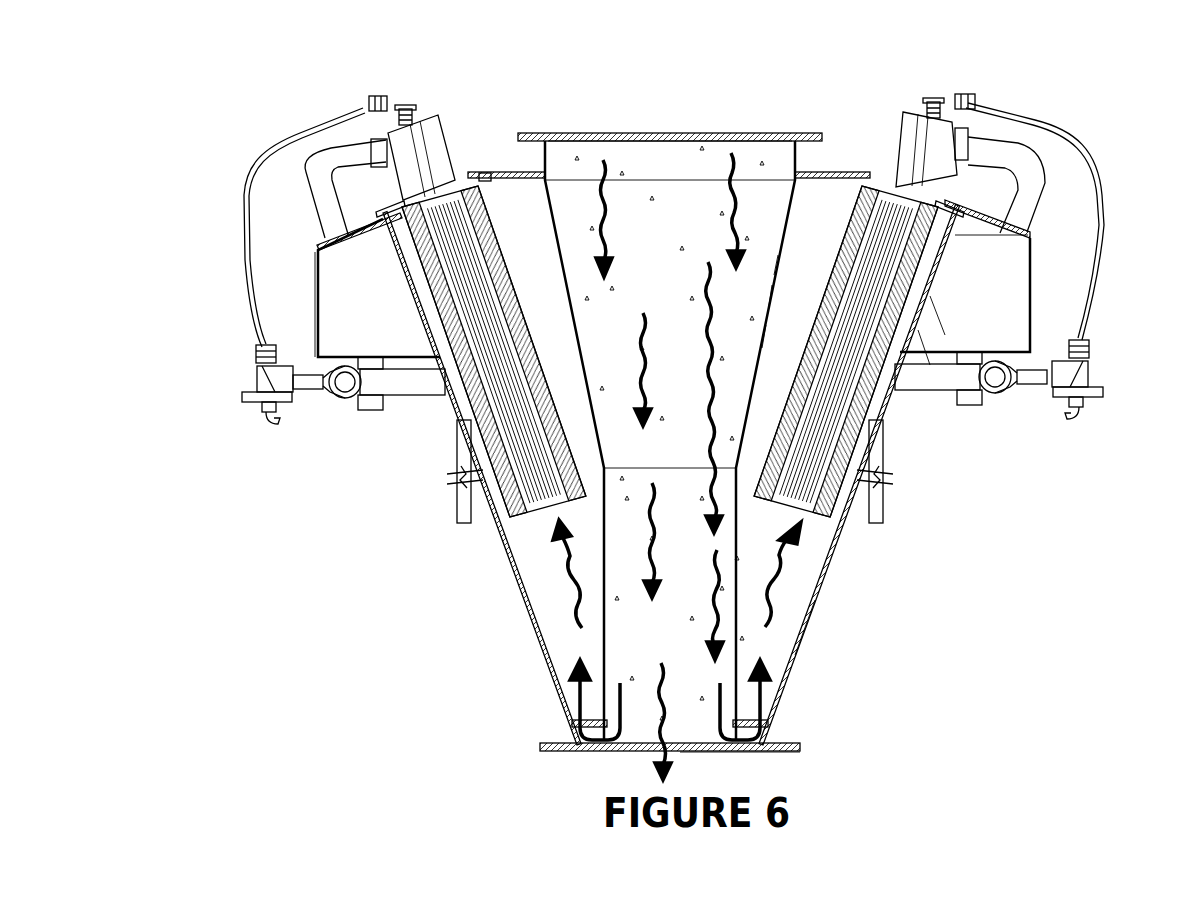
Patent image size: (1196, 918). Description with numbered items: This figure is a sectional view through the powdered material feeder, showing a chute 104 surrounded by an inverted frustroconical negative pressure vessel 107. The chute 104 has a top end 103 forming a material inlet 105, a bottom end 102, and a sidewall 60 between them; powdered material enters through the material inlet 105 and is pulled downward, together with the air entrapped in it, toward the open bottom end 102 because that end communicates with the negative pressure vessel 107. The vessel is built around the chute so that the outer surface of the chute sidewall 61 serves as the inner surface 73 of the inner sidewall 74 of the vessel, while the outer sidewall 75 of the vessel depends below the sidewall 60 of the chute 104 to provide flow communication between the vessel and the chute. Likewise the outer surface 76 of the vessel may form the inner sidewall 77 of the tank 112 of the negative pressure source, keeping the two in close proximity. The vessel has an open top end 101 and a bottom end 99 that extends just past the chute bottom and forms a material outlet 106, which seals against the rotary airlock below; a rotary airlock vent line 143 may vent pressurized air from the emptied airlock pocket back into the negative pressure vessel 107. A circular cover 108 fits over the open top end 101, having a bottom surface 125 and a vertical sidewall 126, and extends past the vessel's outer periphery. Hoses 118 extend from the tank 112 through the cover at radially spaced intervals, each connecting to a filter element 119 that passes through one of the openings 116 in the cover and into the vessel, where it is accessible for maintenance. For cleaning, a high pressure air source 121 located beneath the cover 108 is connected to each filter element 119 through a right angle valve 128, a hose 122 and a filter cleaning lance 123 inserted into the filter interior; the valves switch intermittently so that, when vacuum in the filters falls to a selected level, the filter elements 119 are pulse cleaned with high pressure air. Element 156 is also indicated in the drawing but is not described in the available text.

The sidewall 60 is at (580, 333).
The sidewall of the chute 61 is at (765, 338).
The inner surface 73 is at (783, 265).
The inner sidewall 74 is at (771, 296).
The outer sidewall 75 is at (815, 607).
The outer surface 76 is at (930, 303).
The inner sidewall 77 is at (920, 333).
The bottom end 99 is at (543, 742).
The open top end 101 is at (498, 190).
The bottom end 102 is at (745, 757).
The top end 103 is at (543, 155).
The chute 104 is at (580, 197).
The material inlet 105 is at (777, 130).
The material outlet 106 is at (550, 753).
The negative pressure vessel 107 is at (527, 568).
The cover 108 is at (823, 170).
The tank 112 is at (330, 302).
The openings 116 is at (446, 155).
The hoses 118 is at (310, 173).
The filter elements 119 is at (503, 447).
The high pressure air source 121 is at (420, 390).
The hose 122 is at (313, 123).
The filter cleaning lance 123 is at (384, 105).
The bottom surface 125 is at (257, 360).
The vertical sidewall 126 is at (313, 263).
The right angle valves 128 is at (262, 402).
The rotary airlock vent line 143 is at (893, 468).
The support leg 156 is at (453, 518).